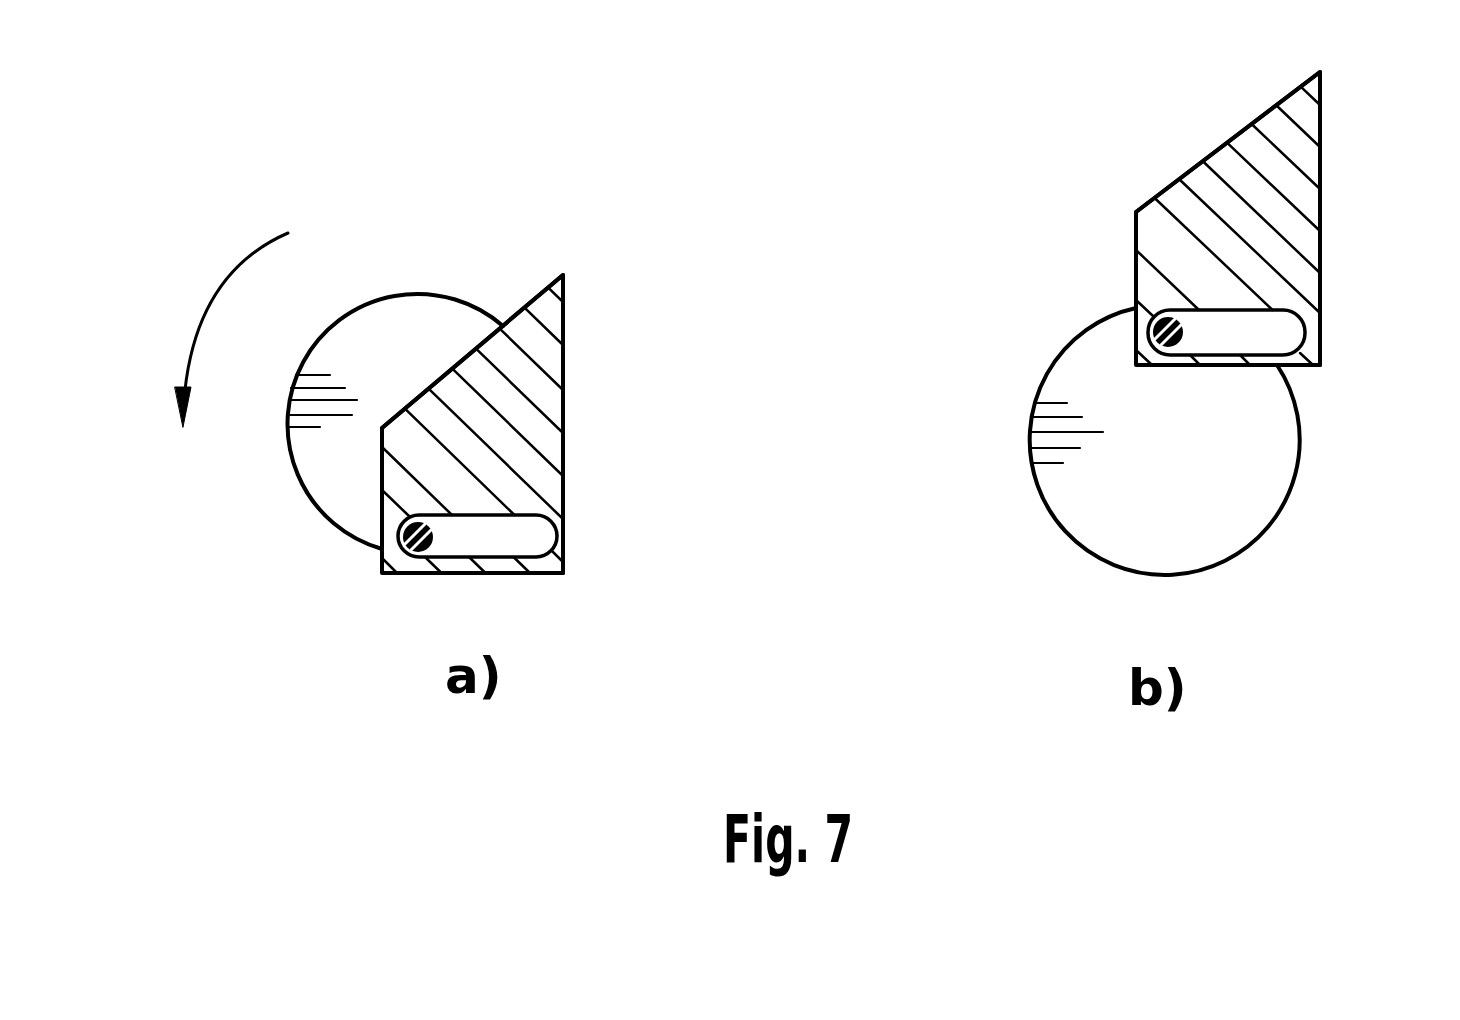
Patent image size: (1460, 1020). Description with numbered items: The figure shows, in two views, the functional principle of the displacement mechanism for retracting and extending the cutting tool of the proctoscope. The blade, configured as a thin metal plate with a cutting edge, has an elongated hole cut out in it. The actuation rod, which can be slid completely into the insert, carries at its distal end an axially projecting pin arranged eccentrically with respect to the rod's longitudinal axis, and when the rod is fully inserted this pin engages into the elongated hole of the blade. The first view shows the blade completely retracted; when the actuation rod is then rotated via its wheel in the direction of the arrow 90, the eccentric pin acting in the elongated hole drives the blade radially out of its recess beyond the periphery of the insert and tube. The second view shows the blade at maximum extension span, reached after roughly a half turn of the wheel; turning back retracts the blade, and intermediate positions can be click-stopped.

The arrow 90 is at (212, 297).